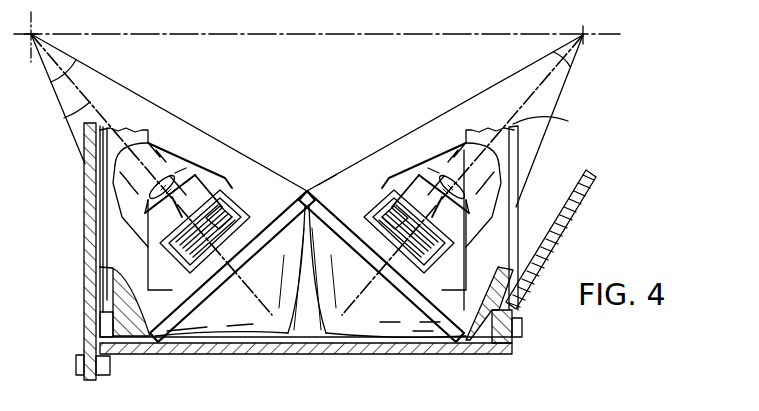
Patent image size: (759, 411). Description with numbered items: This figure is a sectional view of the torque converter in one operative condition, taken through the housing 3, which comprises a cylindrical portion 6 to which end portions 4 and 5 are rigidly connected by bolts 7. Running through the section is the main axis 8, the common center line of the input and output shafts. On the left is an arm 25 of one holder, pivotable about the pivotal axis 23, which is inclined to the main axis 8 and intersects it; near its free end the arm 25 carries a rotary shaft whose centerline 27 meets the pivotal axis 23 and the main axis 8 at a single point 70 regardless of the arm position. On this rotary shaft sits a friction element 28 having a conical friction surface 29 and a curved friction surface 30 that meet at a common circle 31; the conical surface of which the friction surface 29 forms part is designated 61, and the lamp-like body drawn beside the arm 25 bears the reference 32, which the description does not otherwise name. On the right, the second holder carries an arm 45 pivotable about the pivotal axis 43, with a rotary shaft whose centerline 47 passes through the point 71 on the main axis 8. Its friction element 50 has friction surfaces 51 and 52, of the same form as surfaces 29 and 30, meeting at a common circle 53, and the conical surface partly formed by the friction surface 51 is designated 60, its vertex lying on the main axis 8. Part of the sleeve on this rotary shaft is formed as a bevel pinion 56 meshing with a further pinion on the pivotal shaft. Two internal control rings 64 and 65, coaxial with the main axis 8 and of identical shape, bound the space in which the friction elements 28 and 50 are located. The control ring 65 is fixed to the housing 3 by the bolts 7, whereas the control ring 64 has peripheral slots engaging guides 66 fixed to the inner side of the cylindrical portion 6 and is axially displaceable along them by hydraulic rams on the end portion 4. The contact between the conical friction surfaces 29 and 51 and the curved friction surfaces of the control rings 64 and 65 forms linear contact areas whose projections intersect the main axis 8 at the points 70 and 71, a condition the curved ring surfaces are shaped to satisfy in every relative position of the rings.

The housing 3 is at (278, 386).
The end portion 4 is at (84, 234).
The end portion 5 is at (586, 192).
The cylindrical portion 6 is at (325, 352).
The bolts 7 is at (76, 359).
The main axis 8 is at (328, 37).
The centerline of the bore 23 is at (66, 122).
The arm 25 is at (186, 153).
The centerline of the rotary shaft 27 is at (241, 285).
The friction element 28 is at (228, 338).
The friction surface 29 is at (295, 188).
The friction surface 30 is at (291, 350).
The common circle 31 is at (183, 302).
The left lamp 32 is at (235, 202).
The centerline of the bore 43 is at (568, 121).
The arm 45 is at (438, 165).
The centerline of the rotary shaft 47 is at (374, 283).
The friction element 50 is at (371, 338).
The friction surface 51 is at (336, 188).
The friction surface 52 is at (411, 338).
The common circle 53 is at (422, 297).
The bevel pinion 56 is at (378, 202).
The conical surface 60 is at (570, 66).
The conical surface 61 is at (76, 60).
The control ring 64 is at (150, 336).
The control ring 65 is at (479, 346).
The guides 66 is at (100, 298).
The point of intersection 70 is at (33, 33).
The point of intersection 71 is at (583, 34).